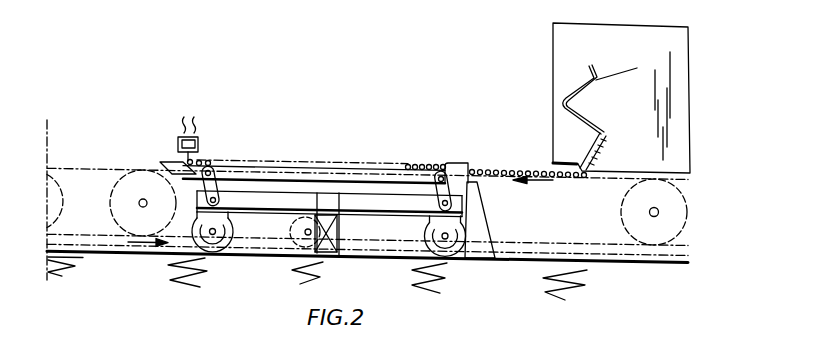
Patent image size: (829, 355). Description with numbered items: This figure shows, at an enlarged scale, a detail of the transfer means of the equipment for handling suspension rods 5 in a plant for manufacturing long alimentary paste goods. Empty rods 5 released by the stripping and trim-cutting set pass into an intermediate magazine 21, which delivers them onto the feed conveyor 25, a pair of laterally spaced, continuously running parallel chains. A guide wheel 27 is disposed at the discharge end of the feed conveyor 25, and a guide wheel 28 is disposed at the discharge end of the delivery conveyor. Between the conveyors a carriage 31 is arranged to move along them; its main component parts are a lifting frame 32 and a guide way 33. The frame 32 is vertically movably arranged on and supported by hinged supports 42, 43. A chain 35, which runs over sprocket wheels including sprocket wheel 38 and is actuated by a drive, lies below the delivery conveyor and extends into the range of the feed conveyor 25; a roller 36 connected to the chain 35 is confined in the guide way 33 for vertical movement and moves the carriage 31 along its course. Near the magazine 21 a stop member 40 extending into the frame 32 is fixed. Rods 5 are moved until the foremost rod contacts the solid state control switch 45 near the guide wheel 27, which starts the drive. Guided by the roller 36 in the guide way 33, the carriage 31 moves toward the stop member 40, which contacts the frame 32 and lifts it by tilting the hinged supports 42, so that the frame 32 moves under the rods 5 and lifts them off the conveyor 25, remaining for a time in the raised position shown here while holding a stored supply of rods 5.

The suspension rods 5 is at (518, 168).
The intermediate magazine 21 is at (578, 158).
The feed conveyor 25 is at (607, 245).
The guide wheel 27 is at (137, 177).
The guide wheel 28 is at (53, 177).
The carriage 31 is at (402, 206).
The lifting frame 32 is at (293, 171).
The guide way 33 is at (335, 218).
The chain 35 is at (247, 251).
The roller 36 is at (337, 254).
The sprocket wheel 38 is at (298, 241).
The stop member 40 is at (480, 252).
The hinged support 42 is at (214, 173).
The hinged support 43 is at (420, 182).
The control switch 45 is at (177, 136).